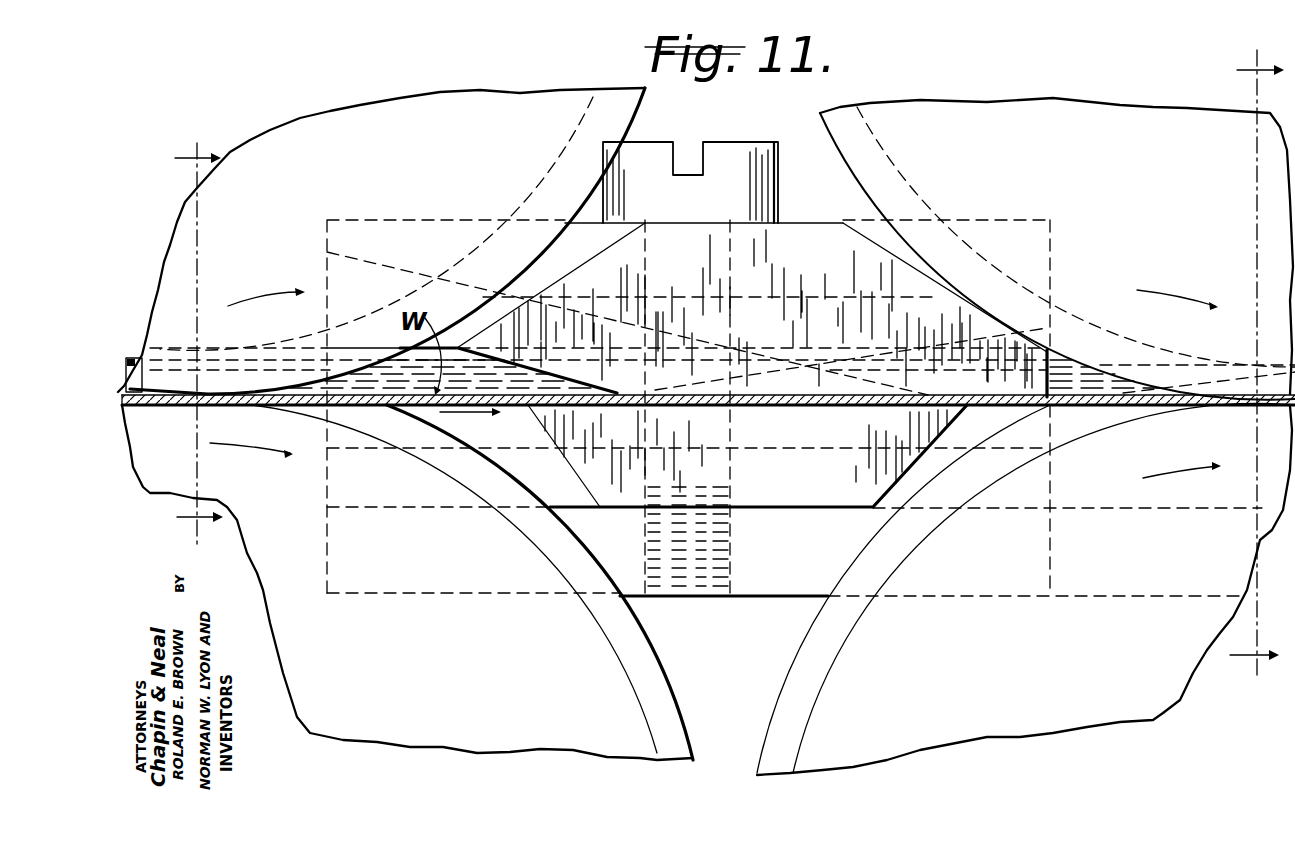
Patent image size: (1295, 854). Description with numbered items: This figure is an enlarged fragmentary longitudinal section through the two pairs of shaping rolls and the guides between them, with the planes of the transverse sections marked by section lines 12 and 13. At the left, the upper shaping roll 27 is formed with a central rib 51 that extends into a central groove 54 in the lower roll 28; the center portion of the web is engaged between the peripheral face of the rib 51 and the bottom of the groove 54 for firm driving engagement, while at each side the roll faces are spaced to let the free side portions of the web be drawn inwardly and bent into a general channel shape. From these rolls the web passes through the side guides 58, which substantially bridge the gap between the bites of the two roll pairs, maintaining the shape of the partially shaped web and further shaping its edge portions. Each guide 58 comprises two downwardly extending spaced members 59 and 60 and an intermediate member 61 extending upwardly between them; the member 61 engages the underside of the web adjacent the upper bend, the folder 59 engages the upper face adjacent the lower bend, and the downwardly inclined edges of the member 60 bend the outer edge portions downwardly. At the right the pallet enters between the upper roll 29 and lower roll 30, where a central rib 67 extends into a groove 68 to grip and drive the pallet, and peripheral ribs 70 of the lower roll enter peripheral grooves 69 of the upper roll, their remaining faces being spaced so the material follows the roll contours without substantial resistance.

The section line 12— 12 is at (191, 342).
The section line 13— 13 is at (1253, 369).
The upper shaping roll 27 is at (500, 78).
The lower roll 28 is at (480, 742).
The upper roll 29 is at (1147, 85).
The lower roll 30 is at (1047, 722).
The central rib 51 is at (646, 99).
The central groove 54 is at (655, 737).
The side guides 58 is at (807, 198).
The downwardly extending member 59 is at (524, 371).
The downwardly extending member 60 is at (503, 297).
The intermediate member 61 is at (668, 388).
The central rib 67 is at (851, 205).
The groove 68 is at (814, 693).
The peripheral grooves 69 is at (1087, 322).
The peripheral ribs 70 is at (855, 560).